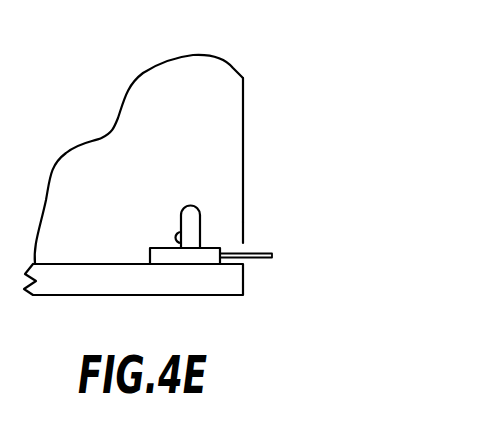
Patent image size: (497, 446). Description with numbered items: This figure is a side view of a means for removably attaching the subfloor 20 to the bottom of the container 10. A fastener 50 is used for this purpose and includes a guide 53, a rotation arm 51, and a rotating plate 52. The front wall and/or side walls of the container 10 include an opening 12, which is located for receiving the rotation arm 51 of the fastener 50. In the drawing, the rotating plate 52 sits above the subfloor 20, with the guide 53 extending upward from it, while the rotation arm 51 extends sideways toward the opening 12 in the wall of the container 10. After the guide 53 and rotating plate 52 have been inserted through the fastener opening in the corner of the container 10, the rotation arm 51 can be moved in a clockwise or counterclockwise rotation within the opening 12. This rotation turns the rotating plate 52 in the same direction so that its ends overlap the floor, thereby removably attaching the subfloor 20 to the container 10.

The container 10 is at (243, 128).
The opening 12 is at (252, 235).
The subfloor 20 is at (243, 280).
The fastener 50 is at (152, 193).
The rotation arm 51 is at (272, 253).
The rotating plate 52 is at (150, 257).
The guide 53 is at (198, 206).